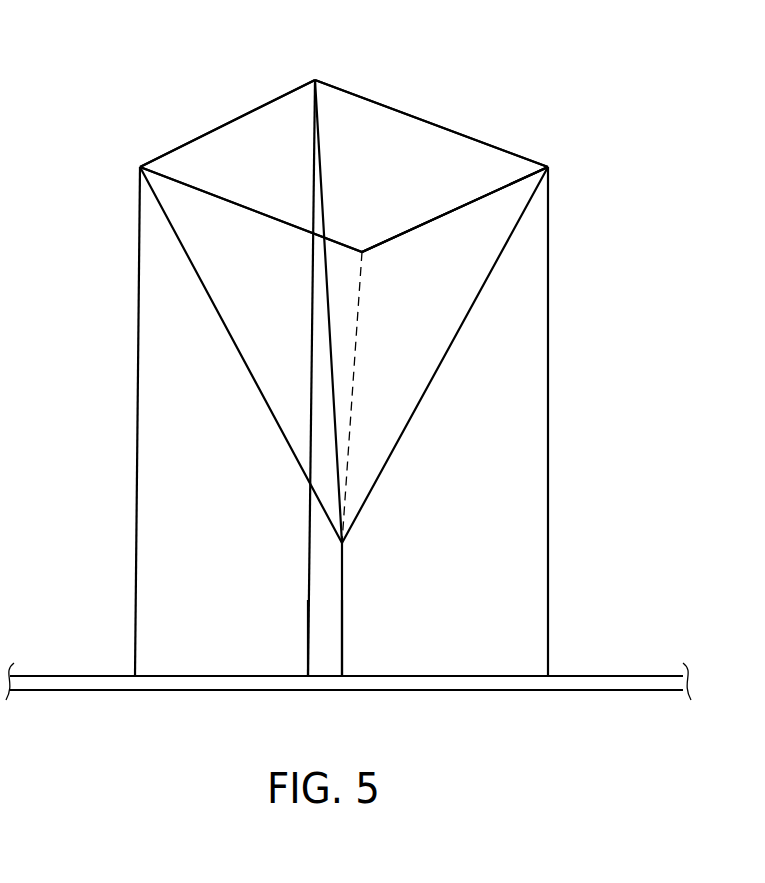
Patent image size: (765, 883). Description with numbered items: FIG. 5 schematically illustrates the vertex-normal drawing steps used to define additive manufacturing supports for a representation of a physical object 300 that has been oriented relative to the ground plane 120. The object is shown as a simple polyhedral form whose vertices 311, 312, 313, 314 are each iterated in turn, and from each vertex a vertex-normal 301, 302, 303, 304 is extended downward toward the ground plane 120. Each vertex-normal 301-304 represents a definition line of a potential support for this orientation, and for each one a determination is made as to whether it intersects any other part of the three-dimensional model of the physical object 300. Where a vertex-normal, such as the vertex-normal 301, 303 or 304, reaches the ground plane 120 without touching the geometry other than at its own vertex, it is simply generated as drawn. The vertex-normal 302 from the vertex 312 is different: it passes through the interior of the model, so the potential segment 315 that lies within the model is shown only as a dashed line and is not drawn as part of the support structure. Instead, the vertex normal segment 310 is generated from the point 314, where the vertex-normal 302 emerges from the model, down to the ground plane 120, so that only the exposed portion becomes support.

The physical object 300 is at (344, 137).
The vertex 313 is at (315, 80).
The vertex 314 is at (140, 167).
The vertex 311 is at (548, 167).
The vertex 312 is at (362, 252).
The potential segment 315 is at (361, 305).
The vertex-normal 301 is at (548, 283).
The vertex-normal 304 is at (136, 455).
The vertex-normal 303 is at (308, 633).
The vertex normal segment 310 is at (342, 632).
The vertex-normal 302 is at (389, 638).
The ground plane 120 is at (608, 676).